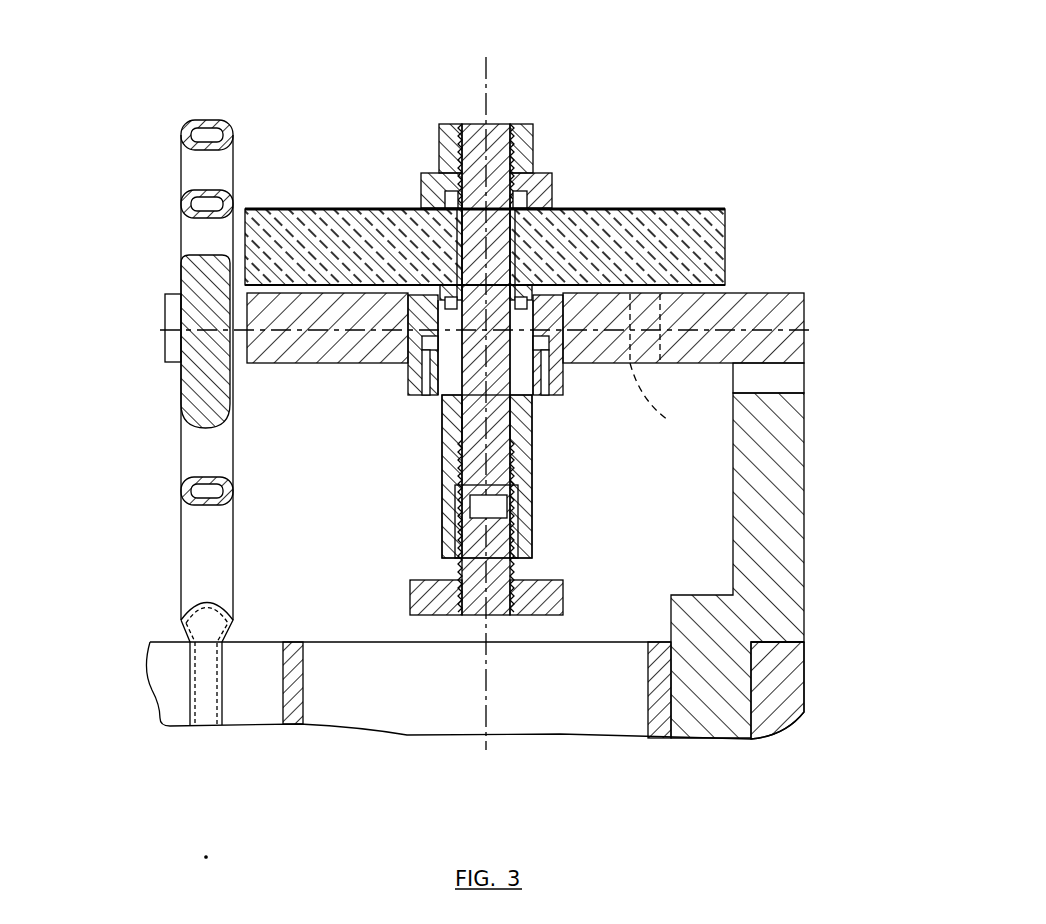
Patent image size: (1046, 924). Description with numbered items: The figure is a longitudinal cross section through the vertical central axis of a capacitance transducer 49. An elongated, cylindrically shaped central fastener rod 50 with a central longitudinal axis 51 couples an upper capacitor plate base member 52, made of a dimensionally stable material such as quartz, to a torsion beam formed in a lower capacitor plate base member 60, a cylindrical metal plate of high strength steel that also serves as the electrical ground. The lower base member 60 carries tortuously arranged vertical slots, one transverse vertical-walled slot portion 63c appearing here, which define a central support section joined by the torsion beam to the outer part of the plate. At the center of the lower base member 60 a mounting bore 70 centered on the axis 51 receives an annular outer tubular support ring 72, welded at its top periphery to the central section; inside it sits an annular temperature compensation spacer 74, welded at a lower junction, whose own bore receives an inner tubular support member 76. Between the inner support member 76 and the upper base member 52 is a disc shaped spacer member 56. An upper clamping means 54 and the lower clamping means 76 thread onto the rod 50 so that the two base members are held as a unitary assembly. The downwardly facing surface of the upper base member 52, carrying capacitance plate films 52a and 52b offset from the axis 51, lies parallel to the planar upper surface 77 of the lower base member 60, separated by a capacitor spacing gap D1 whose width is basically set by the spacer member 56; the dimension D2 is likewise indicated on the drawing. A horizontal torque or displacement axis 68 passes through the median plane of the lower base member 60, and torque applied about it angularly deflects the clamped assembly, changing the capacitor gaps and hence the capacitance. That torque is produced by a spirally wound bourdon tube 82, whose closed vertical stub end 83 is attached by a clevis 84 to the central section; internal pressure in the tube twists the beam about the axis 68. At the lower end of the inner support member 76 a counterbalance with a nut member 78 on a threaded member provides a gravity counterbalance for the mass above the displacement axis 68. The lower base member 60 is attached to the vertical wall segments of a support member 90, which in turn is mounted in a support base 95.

The capacitance transducer 49 is at (748, 177).
The central fastener rod 50 is at (500, 165).
The central longitudinal axis 51 is at (486, 75).
The upper capacitor plate base member 52 is at (724, 230).
The capacitance plate film 52a is at (305, 296).
The capacitance plate film 52b is at (635, 363).
The upper clamping means 54 is at (560, 168).
The disc shaped spacer member 56 is at (540, 285).
The lower capacitor plate base member 60 is at (792, 343).
The transversely arranged vertical walled slot portion 63c is at (670, 370).
The torque or displacement axis 68 is at (790, 328).
The mounting bore 70 is at (550, 375).
The outer tubular support ring 72 is at (545, 385).
The temperature compensation spacer 74 is at (540, 400).
The inner tubular support member 76 is at (530, 500).
The planar upper surface 77 is at (435, 505).
The nut member 78 is at (408, 598).
The spirally wound bourdon tube 82 is at (180, 452).
The closed stub end 83 is at (200, 388).
The clevis 84 is at (165, 345).
The support member 90 is at (737, 565).
The support base 95 is at (790, 685).
The capacitor spacing distance or gap D1 is at (292, 287).
The diameter D2 is at (722, 290).